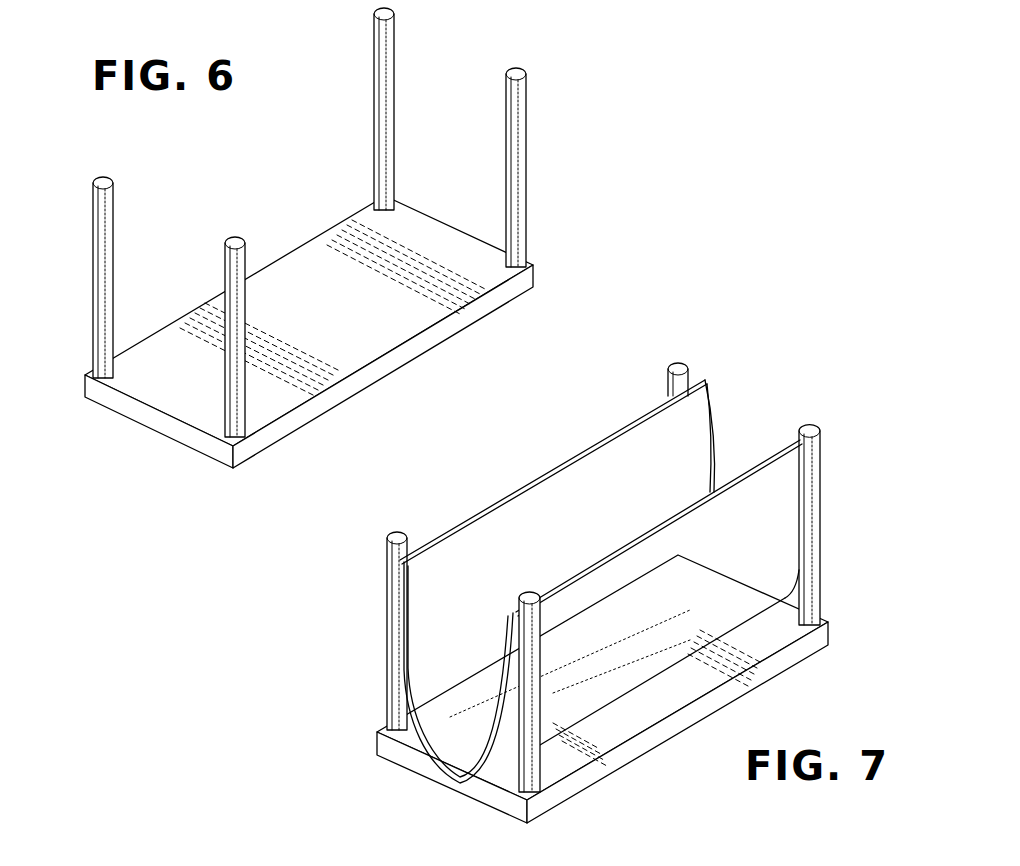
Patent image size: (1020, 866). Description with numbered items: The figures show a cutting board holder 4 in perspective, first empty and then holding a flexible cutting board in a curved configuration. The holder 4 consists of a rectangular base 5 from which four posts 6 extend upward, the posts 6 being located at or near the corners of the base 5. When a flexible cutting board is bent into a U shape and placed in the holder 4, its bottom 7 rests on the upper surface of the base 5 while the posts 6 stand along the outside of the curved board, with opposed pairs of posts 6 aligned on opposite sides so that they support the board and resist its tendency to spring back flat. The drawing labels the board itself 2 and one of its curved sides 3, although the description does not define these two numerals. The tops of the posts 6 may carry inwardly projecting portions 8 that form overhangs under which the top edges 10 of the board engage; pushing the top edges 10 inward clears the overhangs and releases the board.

In FIG. 7, the flexible sheet 2 is at (621, 589).
In FIG. 7, the side wall of sheet 3 is at (783, 535).
In FIG. 6, the cutting board holder 4 is at (313, 245).
In FIG. 6, the base 5 is at (338, 320).
In FIG. 7, the base 5 is at (568, 803).
In FIG. 6, the posts 6 is at (372, 88).
In FIG. 7, the bottom 7 is at (637, 690).
In FIG. 6, the inwardly projecting portions 8 is at (227, 860).
In FIG. 7, the inwardly projecting portions 8 is at (446, 860).
In FIG. 7, the top edges 10 is at (472, 510).